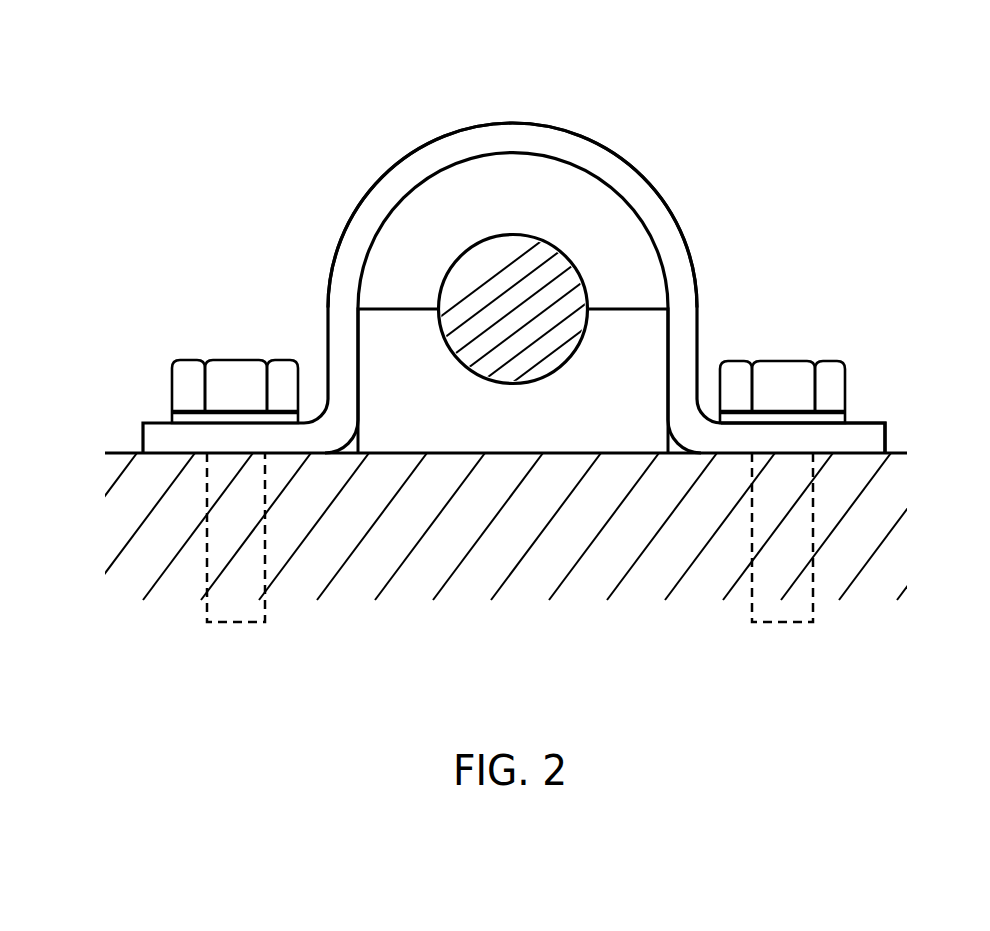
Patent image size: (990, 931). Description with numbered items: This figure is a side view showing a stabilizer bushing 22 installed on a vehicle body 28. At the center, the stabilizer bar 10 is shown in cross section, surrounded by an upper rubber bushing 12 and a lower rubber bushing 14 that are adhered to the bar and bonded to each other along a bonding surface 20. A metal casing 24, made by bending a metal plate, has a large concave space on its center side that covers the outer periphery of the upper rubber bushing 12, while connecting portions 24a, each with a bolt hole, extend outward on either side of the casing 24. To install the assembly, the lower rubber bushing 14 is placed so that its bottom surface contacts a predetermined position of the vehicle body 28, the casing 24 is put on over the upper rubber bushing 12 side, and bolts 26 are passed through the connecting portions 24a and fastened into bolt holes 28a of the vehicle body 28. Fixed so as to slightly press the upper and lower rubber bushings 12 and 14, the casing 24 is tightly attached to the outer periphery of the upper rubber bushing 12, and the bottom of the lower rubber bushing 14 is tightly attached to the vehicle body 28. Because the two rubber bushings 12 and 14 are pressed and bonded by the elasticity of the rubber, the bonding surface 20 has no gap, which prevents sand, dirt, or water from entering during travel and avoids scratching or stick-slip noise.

The stabilizer bar 10 is at (570, 263).
The upper rubber bushing 12 is at (600, 192).
The lower rubber bushing 14 is at (650, 352).
The bonding surface 20 is at (378, 308).
The stabilizer bushing 22 is at (667, 97).
The metal casing 24 is at (541, 121).
The connecting portion 24a is at (870, 422).
The bolt 26 is at (795, 362).
The vehicle body 28 is at (900, 451).
The bolt hole 28a is at (817, 612).